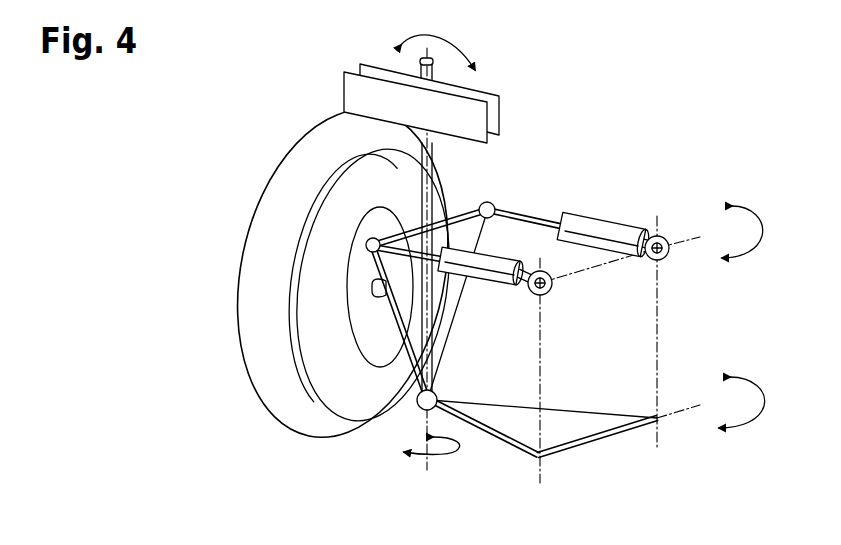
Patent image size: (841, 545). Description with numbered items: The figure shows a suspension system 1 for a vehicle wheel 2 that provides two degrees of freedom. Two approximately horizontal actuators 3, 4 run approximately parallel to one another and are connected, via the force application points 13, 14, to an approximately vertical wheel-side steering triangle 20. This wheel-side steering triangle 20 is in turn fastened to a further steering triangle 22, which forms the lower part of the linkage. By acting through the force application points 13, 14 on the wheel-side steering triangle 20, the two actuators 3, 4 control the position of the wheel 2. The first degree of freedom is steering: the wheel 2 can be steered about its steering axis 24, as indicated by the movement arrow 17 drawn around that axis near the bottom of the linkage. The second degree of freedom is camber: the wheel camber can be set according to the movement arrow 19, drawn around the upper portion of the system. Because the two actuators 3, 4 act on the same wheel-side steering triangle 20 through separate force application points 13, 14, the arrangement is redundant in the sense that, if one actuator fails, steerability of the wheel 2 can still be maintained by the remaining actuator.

The suspension system 1 is at (564, 126).
The wheel 2 is at (272, 197).
The actuator 3 is at (600, 224).
The actuator 4 is at (498, 270).
The force application point 13 is at (490, 201).
The force application point 14 is at (372, 253).
The movement arrow 17 is at (446, 453).
The movement arrow 19 is at (448, 37).
The wheel-side steering triangle 20 is at (442, 338).
The further steering triangle 22 is at (577, 418).
The steering axis 24 is at (437, 157).